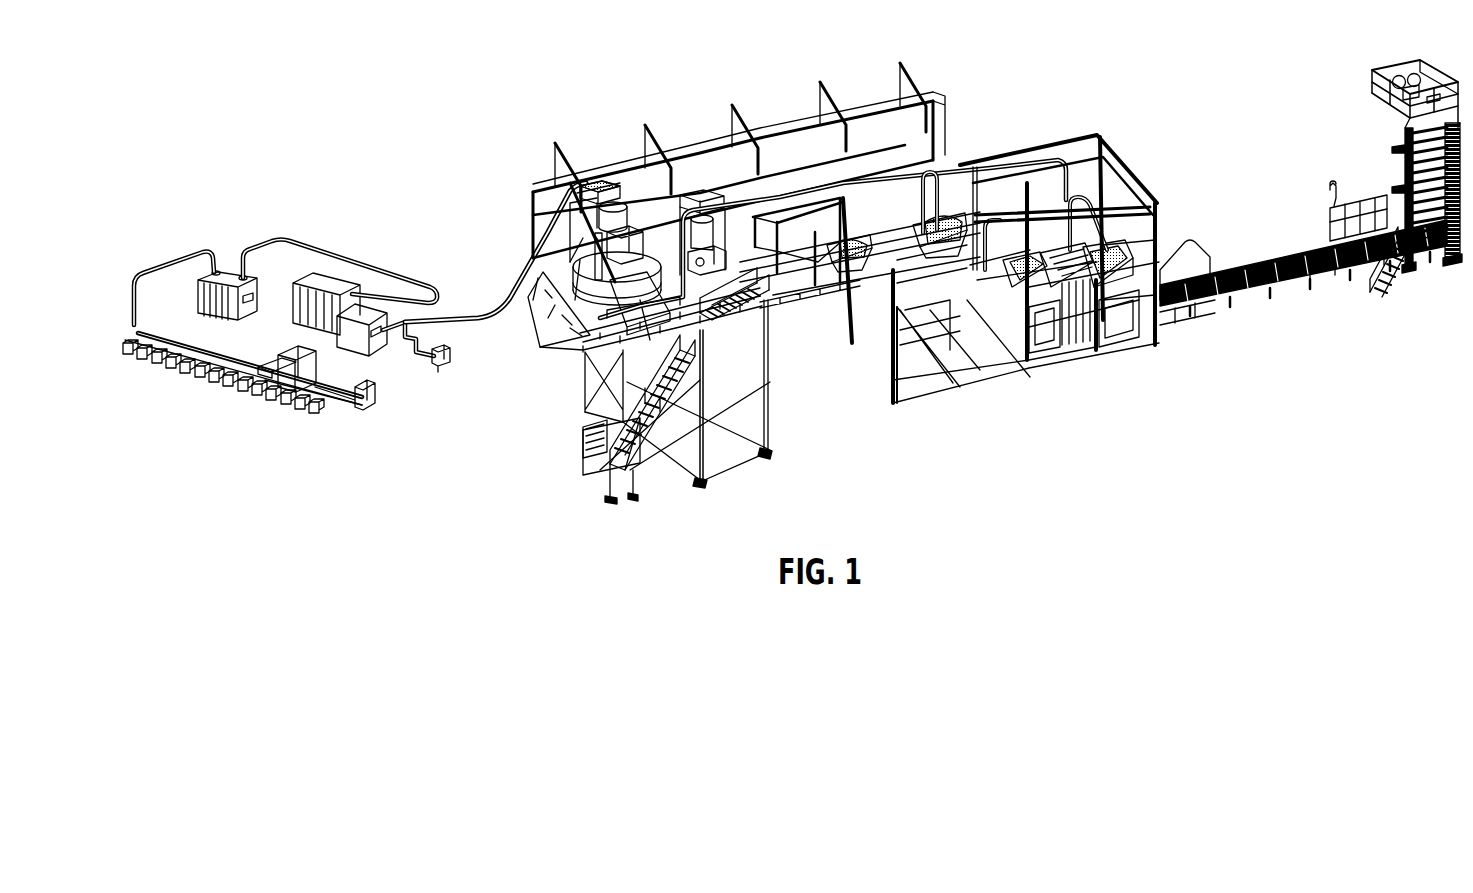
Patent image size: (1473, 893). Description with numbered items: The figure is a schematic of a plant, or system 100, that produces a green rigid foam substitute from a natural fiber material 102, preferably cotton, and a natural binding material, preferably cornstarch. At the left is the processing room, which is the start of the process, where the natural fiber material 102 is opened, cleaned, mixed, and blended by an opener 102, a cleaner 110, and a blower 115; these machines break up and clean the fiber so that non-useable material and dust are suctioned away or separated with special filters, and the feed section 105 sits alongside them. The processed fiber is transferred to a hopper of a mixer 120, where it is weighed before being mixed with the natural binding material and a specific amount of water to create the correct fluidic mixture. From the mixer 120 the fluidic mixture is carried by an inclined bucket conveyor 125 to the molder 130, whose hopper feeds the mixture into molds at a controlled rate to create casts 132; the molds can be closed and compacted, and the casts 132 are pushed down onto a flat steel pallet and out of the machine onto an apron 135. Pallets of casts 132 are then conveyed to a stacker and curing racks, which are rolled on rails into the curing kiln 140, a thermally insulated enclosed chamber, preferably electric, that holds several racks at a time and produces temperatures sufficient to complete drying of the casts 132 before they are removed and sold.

The system 100 is at (212, 92).
The opener 102 is at (158, 368).
The feed station 105 is at (311, 398).
The cleaner 110 is at (225, 267).
The blower 115 is at (355, 290).
The mixer 120 is at (610, 173).
The inclined bucket conveyor 125 is at (922, 232).
The molder 130 is at (1062, 203).
The casts 132 is at (1318, 258).
The apron 135 is at (1292, 275).
The curing kiln 140 is at (1400, 68).